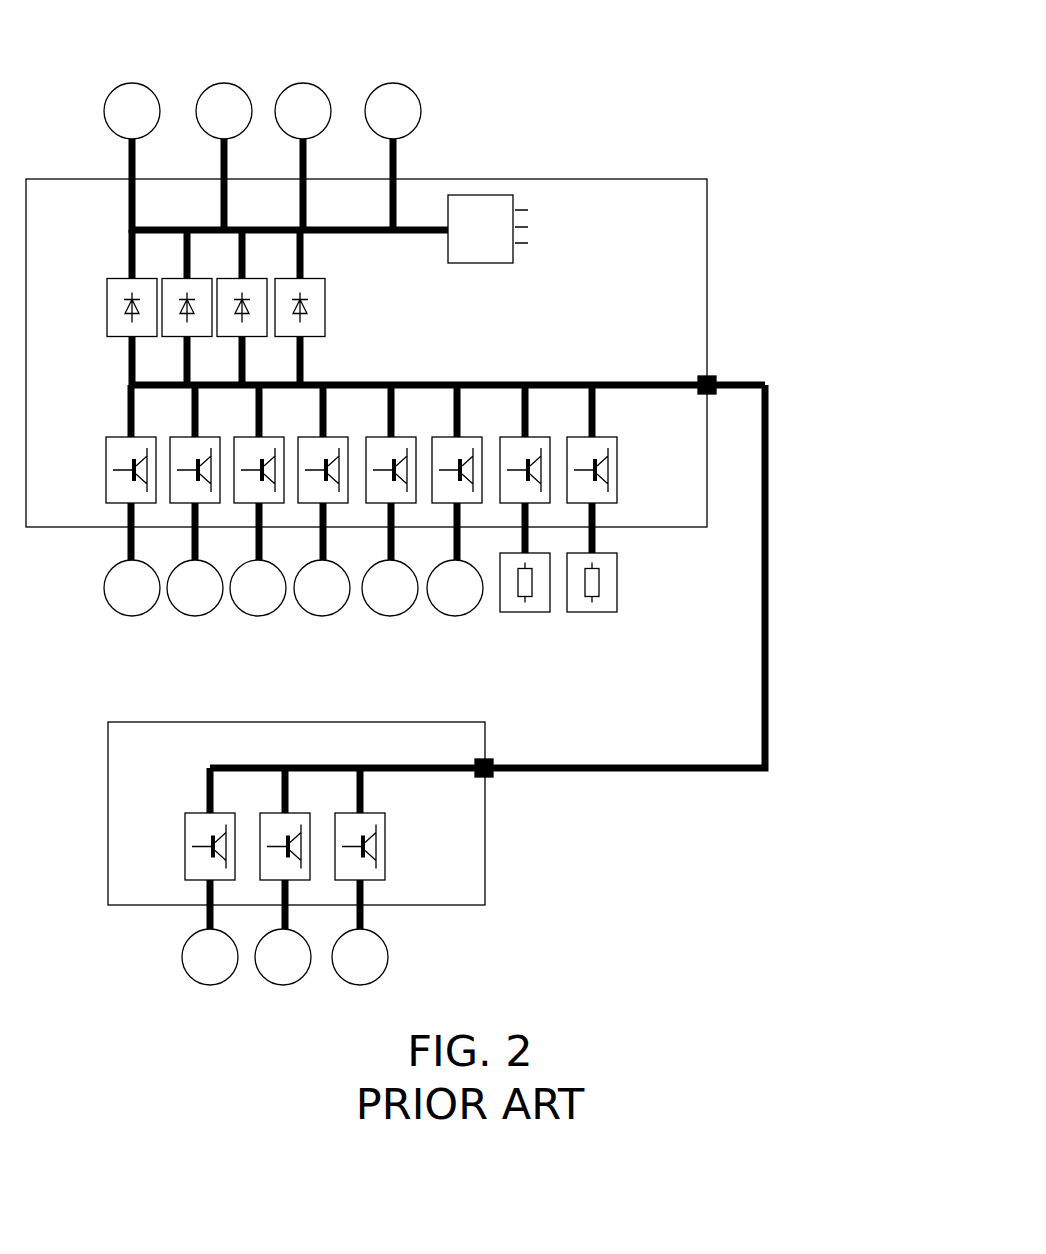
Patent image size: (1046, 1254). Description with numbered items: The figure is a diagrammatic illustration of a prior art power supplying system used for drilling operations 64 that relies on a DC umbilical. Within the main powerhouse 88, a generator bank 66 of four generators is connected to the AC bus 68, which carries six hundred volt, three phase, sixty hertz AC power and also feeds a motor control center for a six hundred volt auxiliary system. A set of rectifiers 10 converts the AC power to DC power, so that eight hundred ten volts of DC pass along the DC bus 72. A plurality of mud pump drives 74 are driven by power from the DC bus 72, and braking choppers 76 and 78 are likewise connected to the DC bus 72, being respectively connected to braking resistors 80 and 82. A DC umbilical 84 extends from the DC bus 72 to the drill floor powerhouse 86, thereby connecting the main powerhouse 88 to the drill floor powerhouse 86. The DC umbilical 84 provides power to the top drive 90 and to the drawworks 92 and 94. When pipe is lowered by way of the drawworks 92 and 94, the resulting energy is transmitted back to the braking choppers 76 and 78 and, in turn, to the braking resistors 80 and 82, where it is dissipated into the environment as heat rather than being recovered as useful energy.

The rectifier 10 is at (342, 305).
The drilling operations system 64 is at (583, 138).
The generator bank 66 is at (447, 87).
The AC bus 68 is at (414, 234).
The DC bus 72 is at (528, 384).
The mud pump drives 74 is at (84, 463).
The braking chopper 76 is at (540, 437).
The braking chopper 78 is at (605, 437).
The braking resistor 80 is at (535, 613).
The braking resistor 82 is at (600, 613).
The DC umbilical 84 is at (765, 603).
The drill floor powerhouse 86 is at (437, 722).
The main powerhouse 88 is at (649, 179).
The top drive 90 is at (174, 842).
The drawworks 92 is at (298, 813).
The drawworks 94 is at (385, 818).